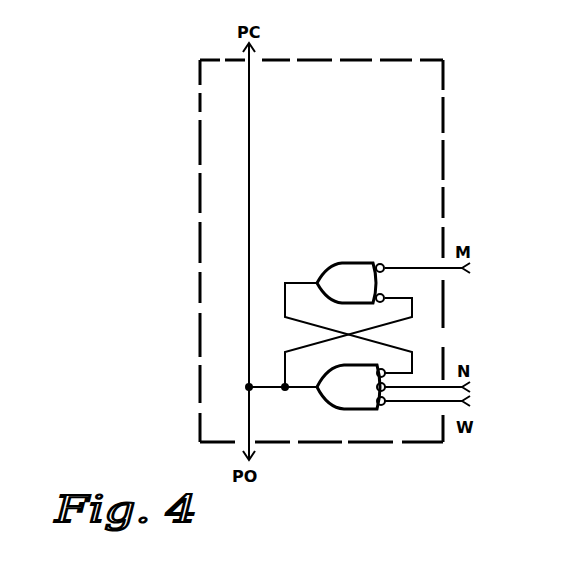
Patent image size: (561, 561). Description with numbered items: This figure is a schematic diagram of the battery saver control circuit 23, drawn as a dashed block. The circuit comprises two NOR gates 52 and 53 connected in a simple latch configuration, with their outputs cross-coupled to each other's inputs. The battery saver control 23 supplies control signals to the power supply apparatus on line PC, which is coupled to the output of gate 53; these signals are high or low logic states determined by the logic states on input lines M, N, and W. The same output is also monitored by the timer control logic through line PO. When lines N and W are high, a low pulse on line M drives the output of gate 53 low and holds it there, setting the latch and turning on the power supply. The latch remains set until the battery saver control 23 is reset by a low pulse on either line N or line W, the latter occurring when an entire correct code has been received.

The battery saver control circuit 23 is at (198, 185).
The NOR gate 52 is at (366, 267).
The NOR gate 53 is at (332, 396).